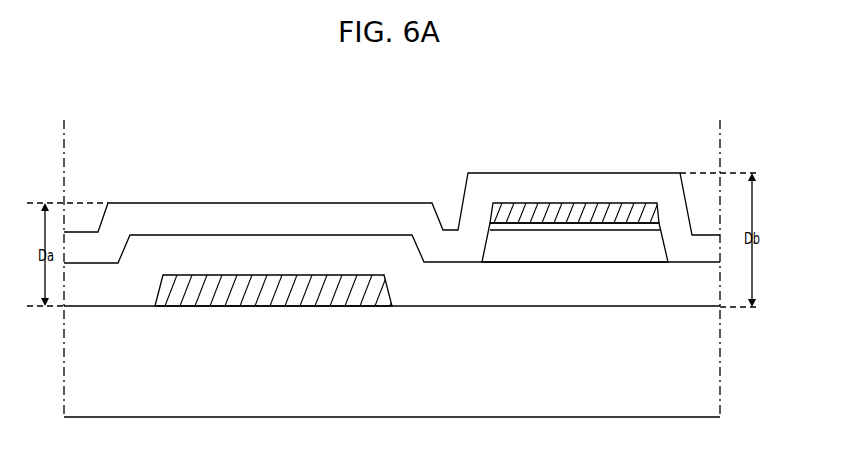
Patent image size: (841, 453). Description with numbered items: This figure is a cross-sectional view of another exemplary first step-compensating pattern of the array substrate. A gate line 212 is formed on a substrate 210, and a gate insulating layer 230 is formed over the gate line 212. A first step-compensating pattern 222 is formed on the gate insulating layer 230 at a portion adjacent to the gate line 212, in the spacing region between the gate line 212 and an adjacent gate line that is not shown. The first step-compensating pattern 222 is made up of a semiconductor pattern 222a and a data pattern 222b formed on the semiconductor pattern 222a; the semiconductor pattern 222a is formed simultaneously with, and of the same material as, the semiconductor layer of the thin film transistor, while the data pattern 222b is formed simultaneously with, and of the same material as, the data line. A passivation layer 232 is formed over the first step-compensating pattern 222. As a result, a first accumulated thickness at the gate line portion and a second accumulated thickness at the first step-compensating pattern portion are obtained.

The substrate 210 is at (389, 394).
The gate line 212 is at (279, 296).
The gate insulating layer 230 is at (452, 288).
The first step-compensating pattern 222 is at (576, 298).
The semiconductor pattern 222a is at (573, 228).
The data pattern 222b is at (612, 213).
The passivation layer 232 is at (264, 215).